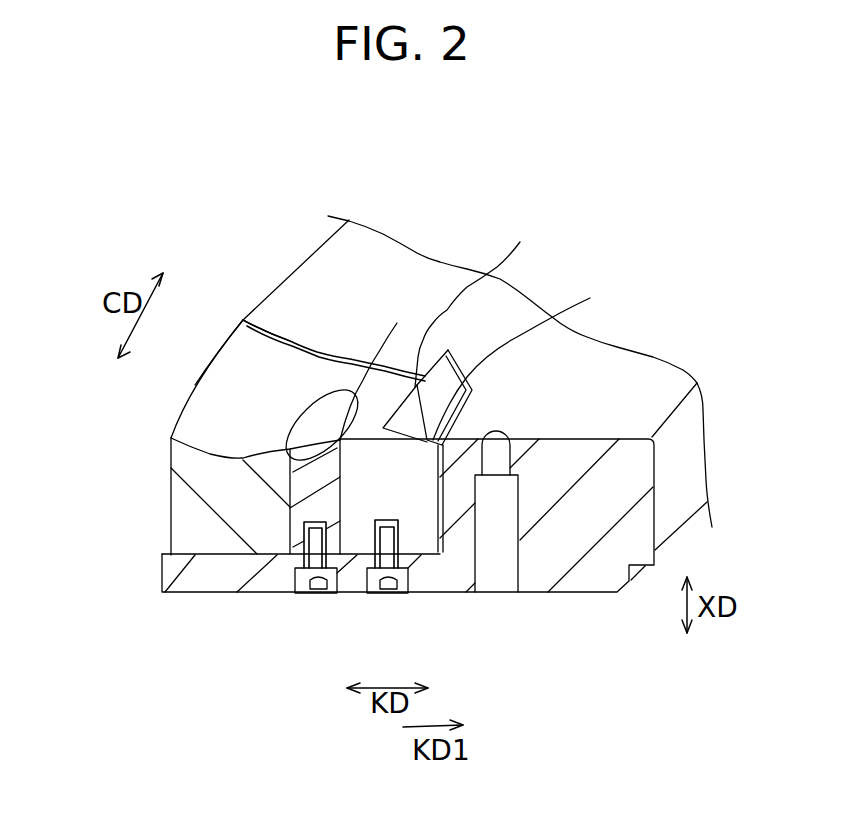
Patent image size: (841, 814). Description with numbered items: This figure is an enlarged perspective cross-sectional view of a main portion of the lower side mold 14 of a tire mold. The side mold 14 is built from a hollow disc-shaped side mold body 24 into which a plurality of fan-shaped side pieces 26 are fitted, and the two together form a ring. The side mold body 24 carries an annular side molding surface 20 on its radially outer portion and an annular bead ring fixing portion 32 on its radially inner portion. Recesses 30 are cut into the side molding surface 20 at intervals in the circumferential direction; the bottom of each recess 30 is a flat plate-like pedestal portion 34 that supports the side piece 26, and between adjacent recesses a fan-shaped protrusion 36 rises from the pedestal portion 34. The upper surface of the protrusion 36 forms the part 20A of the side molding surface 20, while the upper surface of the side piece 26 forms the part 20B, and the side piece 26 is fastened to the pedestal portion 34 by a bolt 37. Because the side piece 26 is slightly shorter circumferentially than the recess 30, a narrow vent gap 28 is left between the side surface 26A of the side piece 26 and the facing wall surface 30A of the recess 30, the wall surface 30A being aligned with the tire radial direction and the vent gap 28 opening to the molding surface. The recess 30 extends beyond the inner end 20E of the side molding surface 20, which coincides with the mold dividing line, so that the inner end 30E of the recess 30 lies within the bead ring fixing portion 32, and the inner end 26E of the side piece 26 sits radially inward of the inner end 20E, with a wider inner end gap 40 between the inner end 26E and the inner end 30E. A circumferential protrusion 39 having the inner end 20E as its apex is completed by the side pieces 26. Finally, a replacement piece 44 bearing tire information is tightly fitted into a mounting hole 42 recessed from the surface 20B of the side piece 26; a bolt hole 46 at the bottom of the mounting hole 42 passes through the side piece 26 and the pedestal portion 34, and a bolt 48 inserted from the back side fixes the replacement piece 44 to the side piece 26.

The side mold 14 is at (386, 134).
The side molding surface 20 is at (375, 311).
The part of side molding surface 20A is at (413, 268).
The part of side molding surface 20B is at (223, 407).
The inner end of side molding surface 20E is at (484, 300).
The side mold body 24 is at (615, 593).
The side piece 26 is at (187, 497).
The side surface of side piece 26A is at (265, 332).
The inner end of side piece 26E is at (441, 521).
The vent gap 28 is at (316, 350).
The recess 30 is at (228, 552).
The wall surface of recess 30A is at (280, 345).
The inner end of recess 30E is at (463, 440).
The bead ring fixing portion 32 is at (607, 353).
The pedestal portion 34 is at (257, 593).
The protrusion 36 is at (330, 245).
The bolt 37 is at (397, 590).
The protrusion 39 is at (448, 350).
The inner end gap 40 is at (531, 355).
The mounting hole 42 is at (379, 365).
The replacement piece 44 is at (308, 417).
The bolt hole 46 is at (298, 557).
The bolt 48 is at (327, 595).